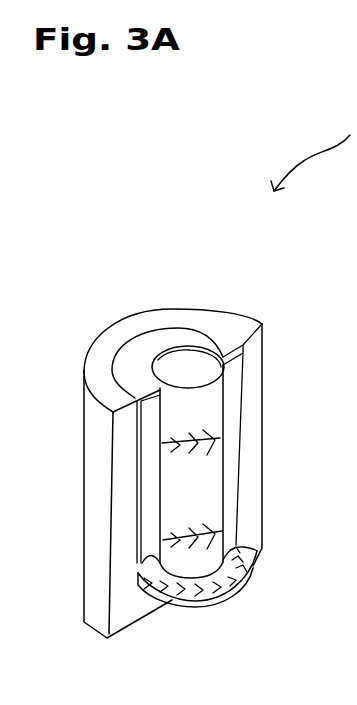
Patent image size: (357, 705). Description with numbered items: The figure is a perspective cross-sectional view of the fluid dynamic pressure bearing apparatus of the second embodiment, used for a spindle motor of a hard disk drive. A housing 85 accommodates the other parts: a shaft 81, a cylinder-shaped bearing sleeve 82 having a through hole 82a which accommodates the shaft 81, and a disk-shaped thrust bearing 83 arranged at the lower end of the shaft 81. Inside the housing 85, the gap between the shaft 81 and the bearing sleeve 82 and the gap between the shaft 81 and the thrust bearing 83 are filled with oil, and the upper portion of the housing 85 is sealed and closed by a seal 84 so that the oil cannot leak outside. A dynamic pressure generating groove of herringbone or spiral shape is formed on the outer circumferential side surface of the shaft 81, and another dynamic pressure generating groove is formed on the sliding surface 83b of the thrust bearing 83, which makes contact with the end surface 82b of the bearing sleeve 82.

The shaft 81 is at (197, 368).
The bearing sleeve 82 is at (230, 507).
The through hole 82a is at (223, 451).
The end surface 82b is at (141, 558).
The thrust bearing 83 is at (205, 603).
The sliding surface 83b is at (243, 560).
The seal 84 is at (210, 337).
The housing 85 is at (121, 337).